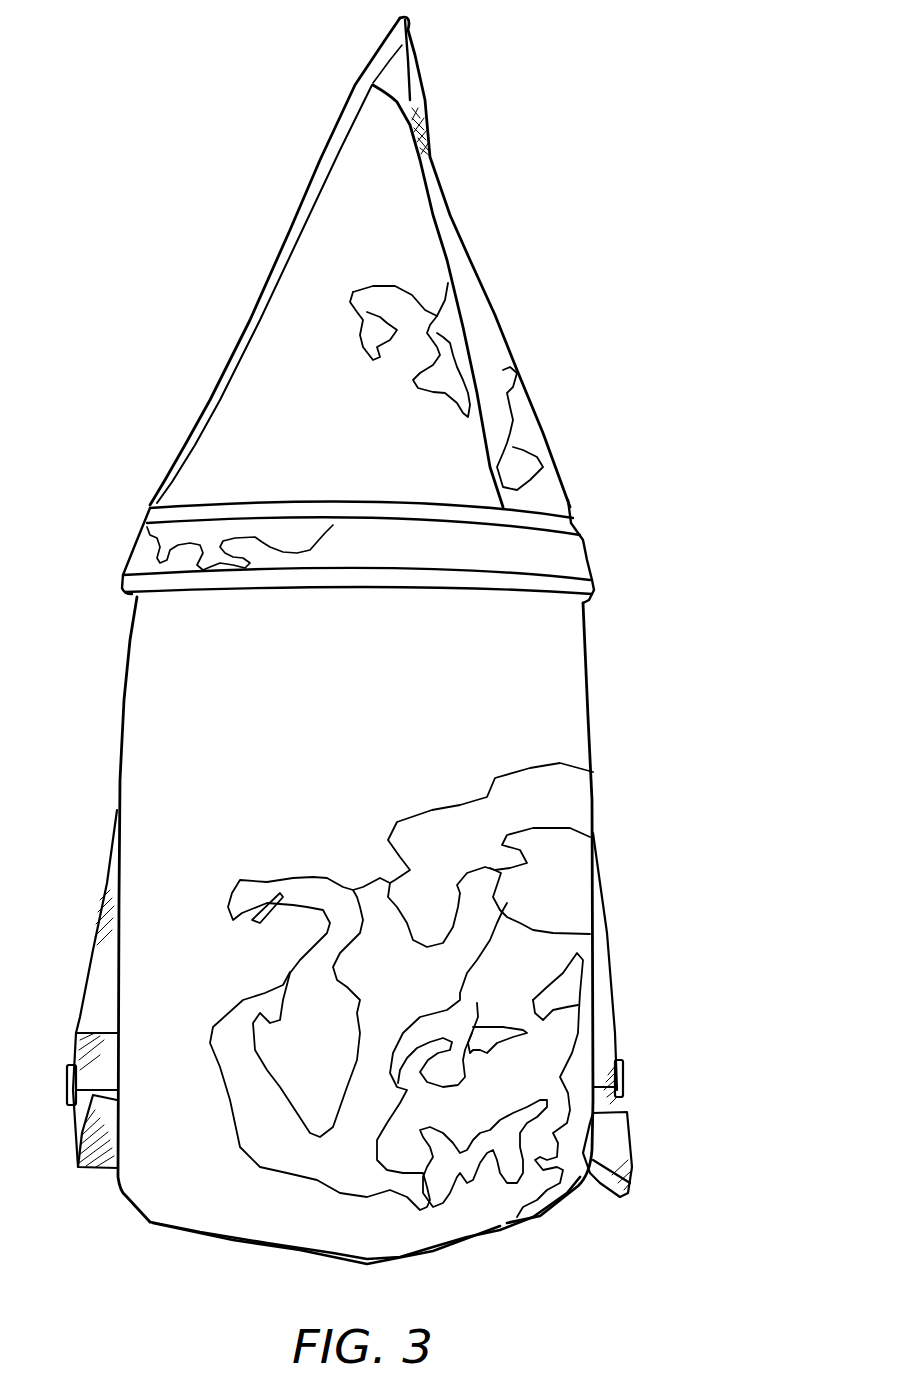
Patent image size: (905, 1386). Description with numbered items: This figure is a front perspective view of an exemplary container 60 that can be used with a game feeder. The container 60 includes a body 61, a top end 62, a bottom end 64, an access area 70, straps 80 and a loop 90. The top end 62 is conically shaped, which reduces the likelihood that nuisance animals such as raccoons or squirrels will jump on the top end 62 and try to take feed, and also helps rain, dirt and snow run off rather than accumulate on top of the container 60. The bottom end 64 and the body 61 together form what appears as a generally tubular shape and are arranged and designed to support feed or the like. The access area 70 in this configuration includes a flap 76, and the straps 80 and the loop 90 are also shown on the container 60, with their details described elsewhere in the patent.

The container 60 is at (386, 733).
The body 61 is at (594, 722).
The top end 62 is at (497, 312).
The bottom end 64 is at (478, 1230).
The access area 70 is at (346, 470).
The flap 76 is at (287, 589).
The straps 80 is at (94, 943).
The loop 90 is at (418, 64).